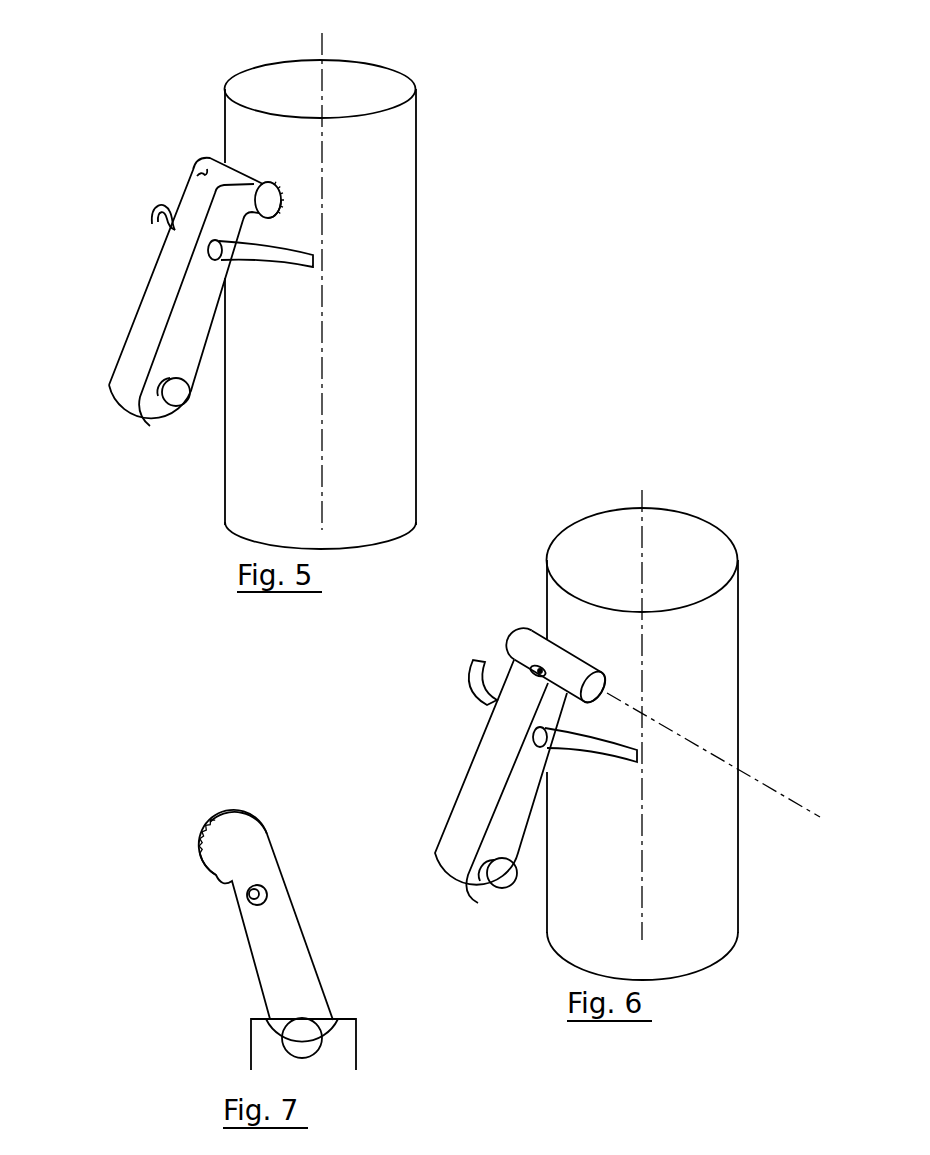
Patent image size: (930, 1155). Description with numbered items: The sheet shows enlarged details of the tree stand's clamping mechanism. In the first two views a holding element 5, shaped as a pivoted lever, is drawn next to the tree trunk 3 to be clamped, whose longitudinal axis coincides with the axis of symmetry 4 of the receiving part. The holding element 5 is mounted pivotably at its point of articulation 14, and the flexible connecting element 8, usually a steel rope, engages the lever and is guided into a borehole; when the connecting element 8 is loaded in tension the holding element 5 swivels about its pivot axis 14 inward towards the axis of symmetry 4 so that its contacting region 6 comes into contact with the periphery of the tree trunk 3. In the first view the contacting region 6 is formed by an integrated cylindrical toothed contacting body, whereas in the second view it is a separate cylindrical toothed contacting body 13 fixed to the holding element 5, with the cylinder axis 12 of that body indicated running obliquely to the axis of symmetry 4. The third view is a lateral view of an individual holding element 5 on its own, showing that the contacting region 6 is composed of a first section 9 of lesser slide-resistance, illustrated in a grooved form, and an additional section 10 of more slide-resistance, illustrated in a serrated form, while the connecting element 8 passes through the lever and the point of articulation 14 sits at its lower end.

In FIG. 5, the tree trunk 3 is at (407, 118).
In FIG. 6, the tree trunk 3 is at (725, 603).
In FIG. 5, the axis of symmetry 4 is at (317, 268).
In FIG. 6, the axis of symmetry 4 is at (642, 700).
In FIG. 5, the holding element 5 is at (193, 195).
In FIG. 6, the holding element 5 is at (520, 677).
In FIG. 7, the holding element 5 is at (258, 863).
In FIG. 5, the contacting region 6 is at (285, 192).
In FIG. 7, the contacting region 6 is at (197, 837).
In FIG. 5, the connecting element 8 is at (152, 211).
In FIG. 6, the connecting element 8 is at (483, 680).
In FIG. 7, the connecting element 8 is at (250, 903).
In FIG. 5, the first section 9 is at (278, 182).
In FIG. 6, the first section 9 is at (602, 680).
In FIG. 7, the first section 9 is at (205, 817).
In FIG. 5, the additional section 10 is at (285, 202).
In FIG. 6, the additional section 10 is at (608, 690).
In FIG. 7, the additional section 10 is at (195, 852).
In FIG. 6, the cylinder axis 12 is at (729, 761).
In FIG. 6, the separate contacting body 13 is at (563, 660).
In FIG. 5, the point of articulation 14 is at (177, 397).
In FIG. 6, the point of articulation 14 is at (498, 873).
In FIG. 7, the point of articulation 14 is at (307, 1040).